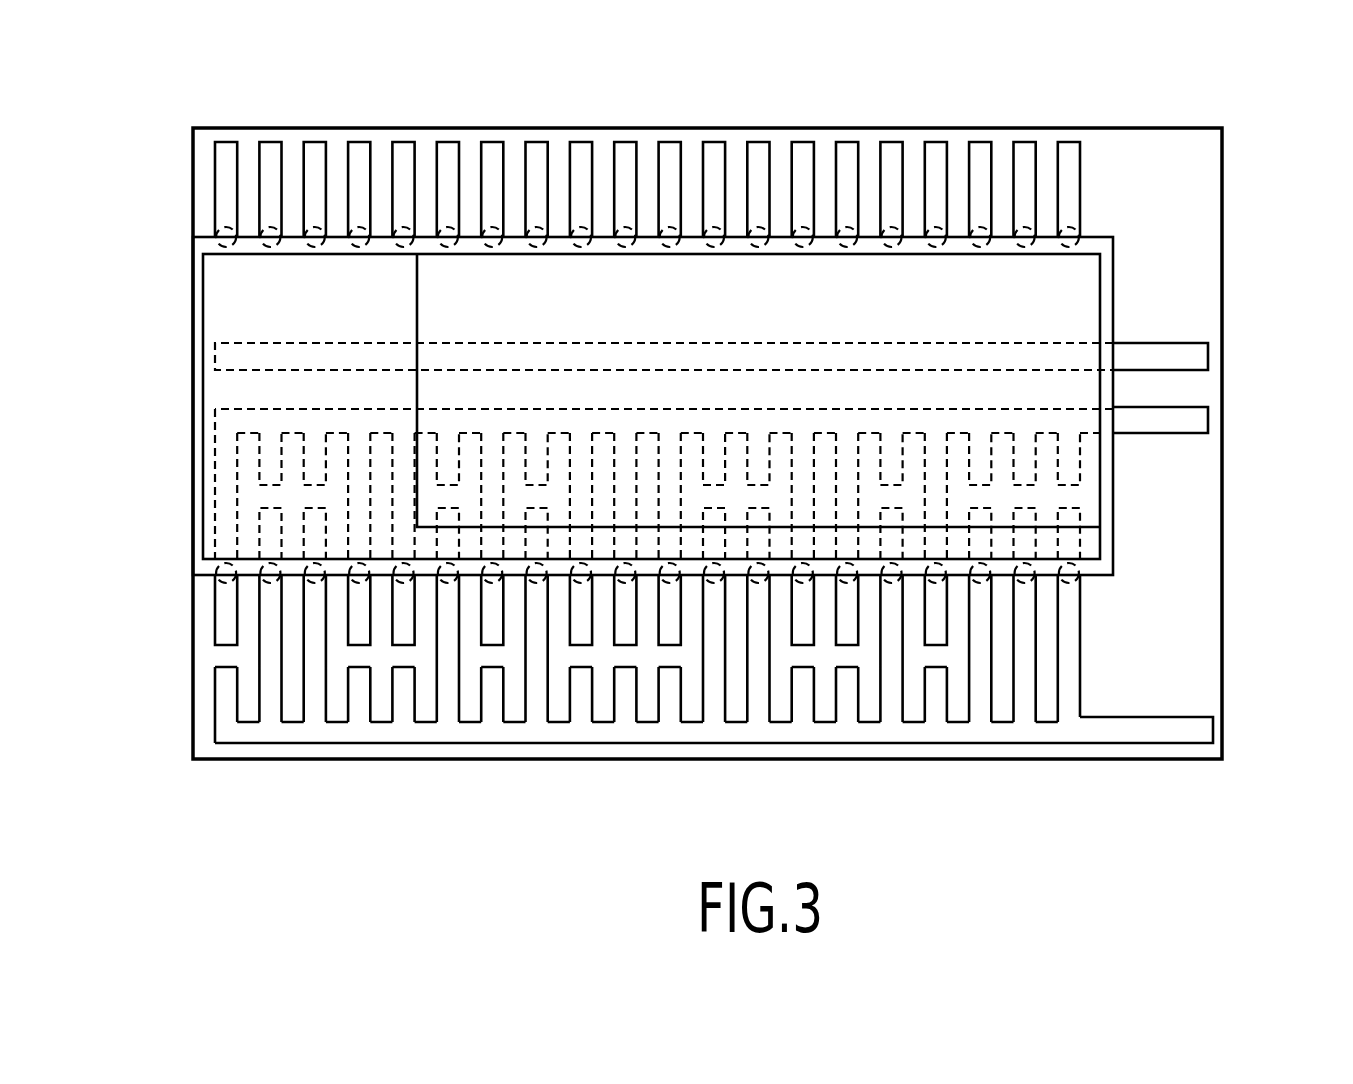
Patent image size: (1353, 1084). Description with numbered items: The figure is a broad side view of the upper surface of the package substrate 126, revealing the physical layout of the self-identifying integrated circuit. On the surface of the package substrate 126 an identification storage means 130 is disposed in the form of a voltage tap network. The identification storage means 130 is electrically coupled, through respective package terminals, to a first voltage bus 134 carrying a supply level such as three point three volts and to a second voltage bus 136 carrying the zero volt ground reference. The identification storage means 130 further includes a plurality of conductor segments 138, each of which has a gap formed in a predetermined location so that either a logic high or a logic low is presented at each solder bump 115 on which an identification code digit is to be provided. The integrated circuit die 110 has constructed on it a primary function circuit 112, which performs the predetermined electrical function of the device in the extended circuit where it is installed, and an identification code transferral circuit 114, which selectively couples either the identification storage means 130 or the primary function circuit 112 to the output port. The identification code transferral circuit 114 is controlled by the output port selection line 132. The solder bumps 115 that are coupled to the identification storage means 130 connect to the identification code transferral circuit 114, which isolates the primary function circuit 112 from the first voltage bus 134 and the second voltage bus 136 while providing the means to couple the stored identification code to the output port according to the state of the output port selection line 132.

The integrated circuit die 110 is at (1103, 567).
The primary function circuit 112 is at (1078, 309).
The identification code transferral circuit 114 is at (223, 312).
The solder bump 115 is at (225, 582).
The package substrate 126 is at (1200, 184).
The identification storage means 130 is at (1067, 727).
The output port selection line 132 is at (1192, 362).
The first voltage bus 134 is at (1200, 418).
The second voltage bus 136 is at (1202, 732).
The conductor segments 138 is at (585, 682).